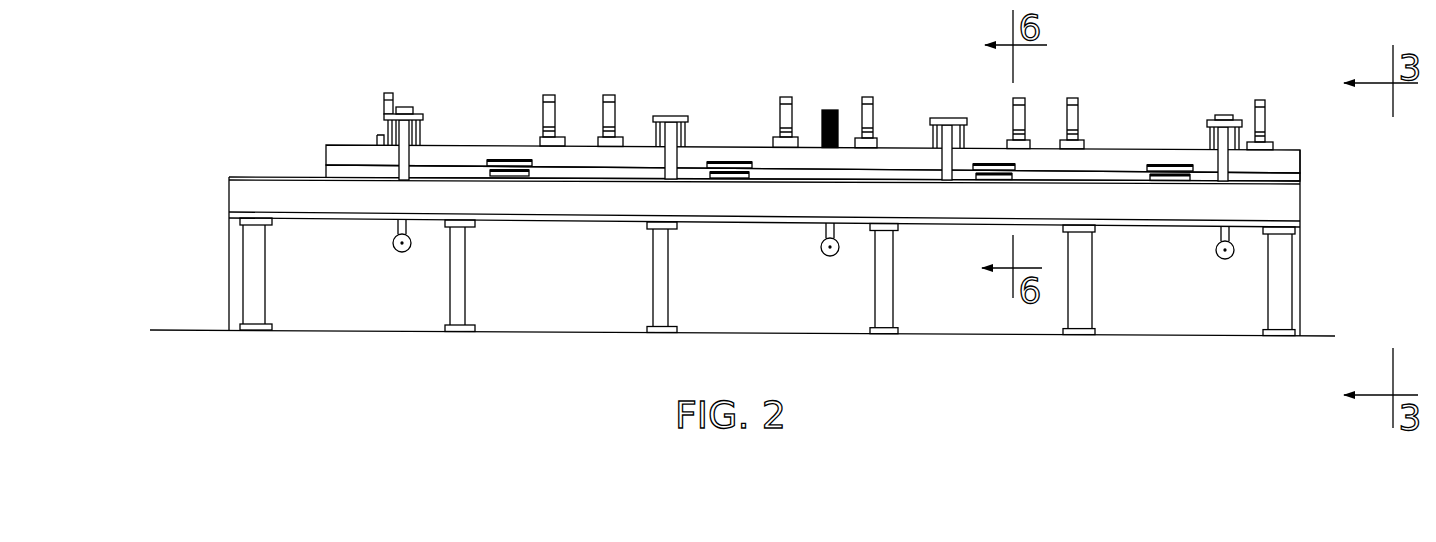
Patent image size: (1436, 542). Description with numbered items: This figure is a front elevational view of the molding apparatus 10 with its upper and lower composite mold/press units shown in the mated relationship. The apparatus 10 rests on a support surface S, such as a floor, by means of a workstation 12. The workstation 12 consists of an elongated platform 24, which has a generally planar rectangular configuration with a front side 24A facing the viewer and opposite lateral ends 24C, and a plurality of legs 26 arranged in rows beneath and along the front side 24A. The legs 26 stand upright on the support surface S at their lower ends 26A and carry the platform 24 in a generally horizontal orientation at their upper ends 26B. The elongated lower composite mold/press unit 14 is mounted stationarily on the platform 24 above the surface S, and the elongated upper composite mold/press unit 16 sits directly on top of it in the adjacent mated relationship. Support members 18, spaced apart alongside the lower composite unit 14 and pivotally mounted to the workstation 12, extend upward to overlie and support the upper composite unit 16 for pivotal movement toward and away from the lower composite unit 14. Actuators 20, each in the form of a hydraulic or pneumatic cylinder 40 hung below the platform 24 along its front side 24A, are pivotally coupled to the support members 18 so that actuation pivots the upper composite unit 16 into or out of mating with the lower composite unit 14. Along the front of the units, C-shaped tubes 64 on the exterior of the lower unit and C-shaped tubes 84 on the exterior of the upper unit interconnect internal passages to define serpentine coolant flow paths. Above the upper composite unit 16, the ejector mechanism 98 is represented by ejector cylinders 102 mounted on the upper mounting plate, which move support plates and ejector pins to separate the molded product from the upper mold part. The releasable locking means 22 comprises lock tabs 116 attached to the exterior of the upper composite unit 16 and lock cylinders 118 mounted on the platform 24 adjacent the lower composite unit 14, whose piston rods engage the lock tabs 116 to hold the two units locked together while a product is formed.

The molding apparatus 10 is at (340, 104).
The workstation 12 is at (222, 234).
The lower composite mold/press unit 14 is at (322, 172).
The upper composite mold/press unit 16 is at (323, 145).
The support members 18 is at (407, 107).
The actuators 20 is at (394, 249).
The releasable locking means 22 is at (427, 128).
The platform 24 is at (229, 205).
The front side of platform 24A is at (293, 221).
The lateral ends of platform 24C is at (229, 178).
The legs 26 is at (243, 294).
The lower ends of legs 26A is at (253, 332).
The upper ends of legs 26B is at (258, 226).
The hydraulic or pneumatic cylinder 40 is at (400, 255).
The C-shaped tubes 64 is at (512, 180).
The C-shaped tubes 84 is at (502, 160).
The ejector mechanism 98 is at (530, 107).
The ejector cylinders 102 is at (383, 108).
The lock tabs 116 is at (418, 113).
The lock cylinders 118 is at (398, 158).
The support surface S is at (186, 330).